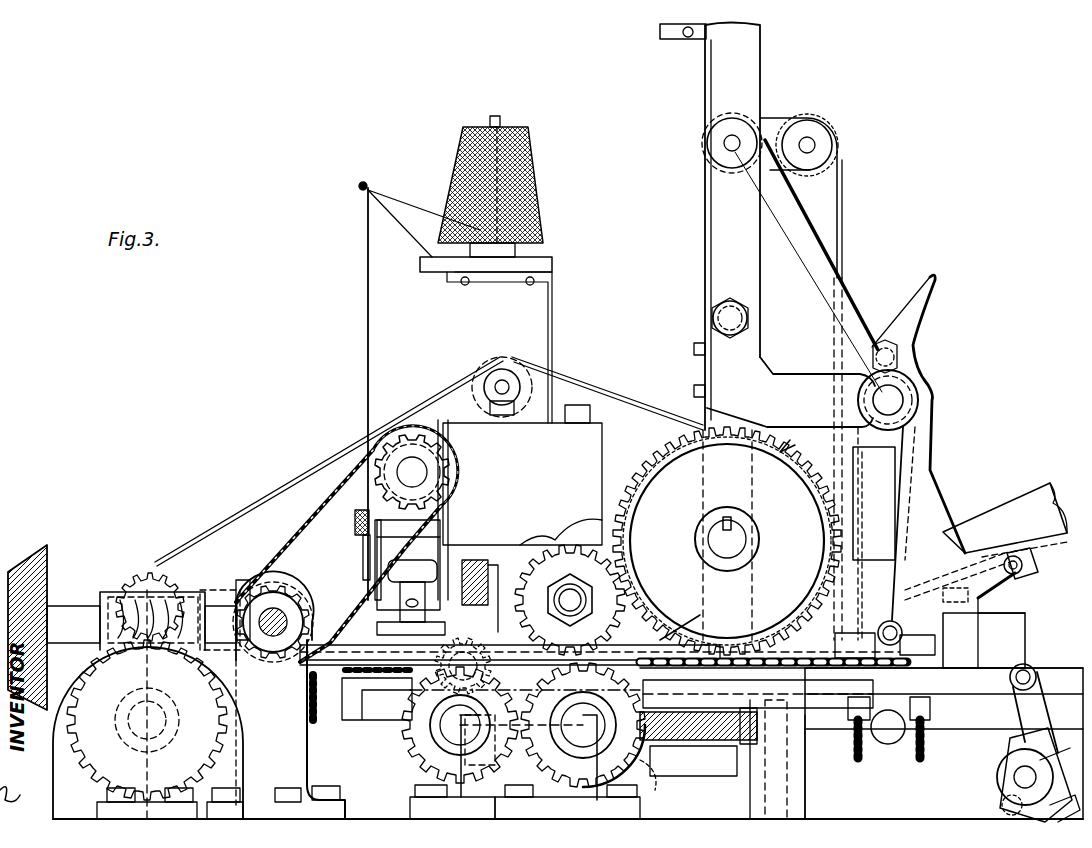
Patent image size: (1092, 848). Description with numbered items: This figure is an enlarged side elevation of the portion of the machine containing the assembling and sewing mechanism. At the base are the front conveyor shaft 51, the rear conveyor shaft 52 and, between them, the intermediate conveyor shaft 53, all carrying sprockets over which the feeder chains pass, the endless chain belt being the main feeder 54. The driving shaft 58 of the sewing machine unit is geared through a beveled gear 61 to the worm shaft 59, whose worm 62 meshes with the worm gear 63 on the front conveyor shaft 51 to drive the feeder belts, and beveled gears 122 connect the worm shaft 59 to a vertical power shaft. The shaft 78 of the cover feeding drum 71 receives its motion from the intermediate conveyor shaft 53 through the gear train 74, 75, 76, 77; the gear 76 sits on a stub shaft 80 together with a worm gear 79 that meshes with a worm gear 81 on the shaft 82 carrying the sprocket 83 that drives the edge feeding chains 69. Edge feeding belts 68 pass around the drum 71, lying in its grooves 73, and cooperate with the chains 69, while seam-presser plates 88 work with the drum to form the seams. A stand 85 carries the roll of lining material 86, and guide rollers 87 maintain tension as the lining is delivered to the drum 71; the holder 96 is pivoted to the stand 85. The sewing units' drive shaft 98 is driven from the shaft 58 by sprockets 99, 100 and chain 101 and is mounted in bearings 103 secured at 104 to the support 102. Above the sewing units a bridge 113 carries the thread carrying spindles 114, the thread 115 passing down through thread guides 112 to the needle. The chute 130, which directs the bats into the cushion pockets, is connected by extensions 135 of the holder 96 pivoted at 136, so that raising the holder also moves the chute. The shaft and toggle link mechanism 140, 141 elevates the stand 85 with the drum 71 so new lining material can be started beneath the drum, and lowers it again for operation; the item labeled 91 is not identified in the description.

The front conveyor shaft 51 is at (160, 730).
The rear conveyor shaft 52 is at (890, 742).
The intermediate conveyor shaft 53 is at (448, 730).
The main feeder 54 is at (368, 690).
The driving shaft of the sewing machine unit 58 is at (298, 595).
The worm shaft 59 is at (110, 590).
The beveled gear 61 is at (262, 578).
The worm 62 is at (158, 575).
The worm gear 63 is at (80, 748).
The edge feeding belts 68 is at (700, 408).
The edge feeding chains 69 is at (893, 668).
The cover feeding drum 71 is at (799, 440).
The grooves 73 is at (660, 452).
The gear 74 is at (650, 464).
The gear 75 is at (578, 548).
The gear 76 is at (661, 783).
The gear 77 is at (445, 745).
The shaft of the drum 78 is at (735, 534).
The worm gear 79 is at (540, 735).
The stub shaft 80 is at (582, 740).
The worm gear 81 is at (705, 755).
The shaft 82 is at (775, 720).
The sprocket 83 is at (686, 620).
The stand 85 is at (715, 230).
The roll of lining material 86 is at (702, 84).
The guide rollers 87 is at (748, 125).
The seam-presser plates 88 is at (868, 468).
The lever 91 is at (922, 402).
The holder 96 is at (1000, 620).
The sewing units' drive shaft 98 is at (415, 472).
The sprocket 99 is at (318, 612).
The sprocket 100 is at (434, 488).
The chain 101 is at (329, 461).
The support 102 is at (548, 425).
The bearings 103 is at (452, 512).
The securing point 104 is at (440, 432).
The thread guides 112 is at (385, 222).
The bridge 113 is at (440, 277).
The thread carrying spindles 114 is at (498, 118).
The thread 115 is at (366, 350).
The beveled gears 122 is at (23, 620).
The chute 130 is at (1005, 515).
The extensions 135 is at (982, 594).
The pivot 136 is at (1025, 572).
The shaft and toggle link mechanism 140 is at (1008, 777).
The shaft and toggle link mechanism 141 is at (1010, 787).